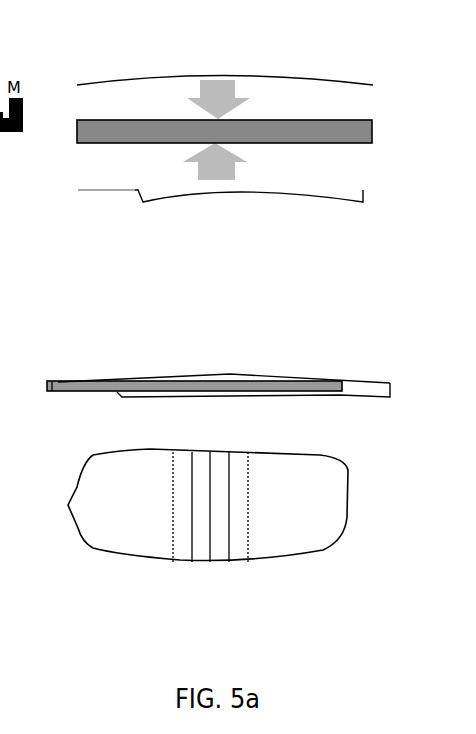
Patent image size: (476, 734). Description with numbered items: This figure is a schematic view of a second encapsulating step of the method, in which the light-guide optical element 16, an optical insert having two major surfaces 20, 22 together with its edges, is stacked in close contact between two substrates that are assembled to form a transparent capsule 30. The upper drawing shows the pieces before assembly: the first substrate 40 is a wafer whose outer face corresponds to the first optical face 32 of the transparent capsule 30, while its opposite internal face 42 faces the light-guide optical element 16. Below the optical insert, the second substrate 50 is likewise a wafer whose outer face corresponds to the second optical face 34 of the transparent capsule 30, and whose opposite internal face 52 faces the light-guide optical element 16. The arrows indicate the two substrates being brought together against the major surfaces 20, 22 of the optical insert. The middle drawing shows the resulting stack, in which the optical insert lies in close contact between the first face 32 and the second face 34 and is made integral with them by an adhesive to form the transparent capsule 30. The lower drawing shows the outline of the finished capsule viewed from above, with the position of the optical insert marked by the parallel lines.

The light-guide optical element 16 is at (362, 127).
The lower surface 20 is at (338, 145).
The major surface 22 is at (330, 120).
The transparent capsule 30 is at (393, 395).
The first face 32 is at (373, 83).
The second face 34 is at (330, 202).
The first substrate 40 is at (157, 68).
The internal face 42 is at (315, 82).
The second substrate 50 is at (157, 205).
The internal face 52 is at (117, 185).